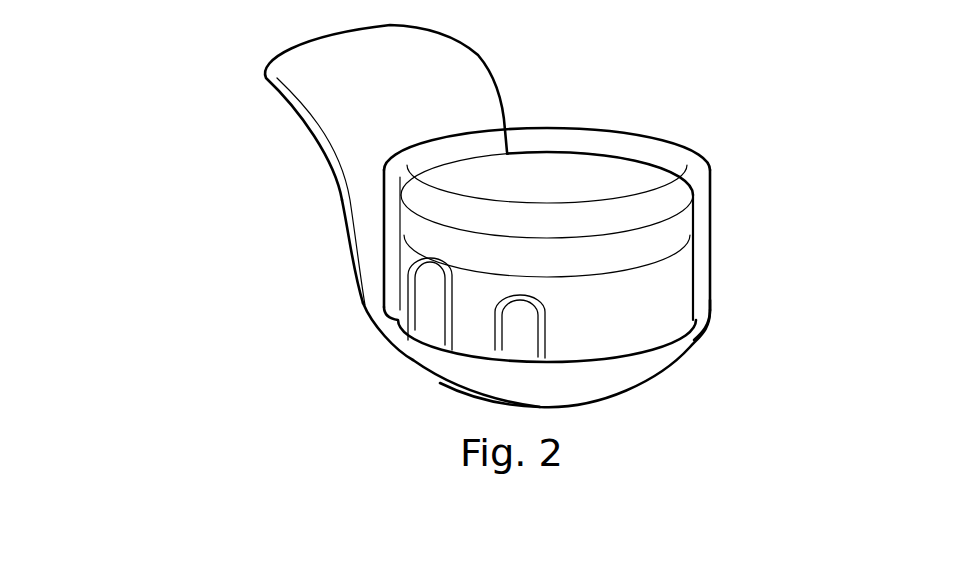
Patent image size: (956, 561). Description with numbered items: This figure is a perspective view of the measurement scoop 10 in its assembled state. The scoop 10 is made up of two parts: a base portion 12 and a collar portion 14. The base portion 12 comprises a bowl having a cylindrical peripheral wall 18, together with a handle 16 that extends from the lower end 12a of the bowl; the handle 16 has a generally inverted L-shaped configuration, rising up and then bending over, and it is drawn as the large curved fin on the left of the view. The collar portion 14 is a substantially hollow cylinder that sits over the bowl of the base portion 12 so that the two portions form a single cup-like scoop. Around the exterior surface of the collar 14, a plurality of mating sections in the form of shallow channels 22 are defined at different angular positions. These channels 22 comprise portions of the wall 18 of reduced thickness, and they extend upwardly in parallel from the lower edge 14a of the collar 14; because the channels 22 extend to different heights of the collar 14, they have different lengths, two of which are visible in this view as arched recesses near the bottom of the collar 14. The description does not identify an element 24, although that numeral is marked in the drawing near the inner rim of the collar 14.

The measurement scoop 10 is at (158, 181).
The base portion 12 is at (363, 282).
The lower end 12a is at (421, 401).
The collar portion 14 is at (658, 155).
The lower edge 14a is at (732, 325).
The handle 16 is at (295, 102).
The cylindrical peripheral wall 18 is at (647, 360).
The channels 22 is at (513, 337).
The inner rim 24 is at (432, 158).